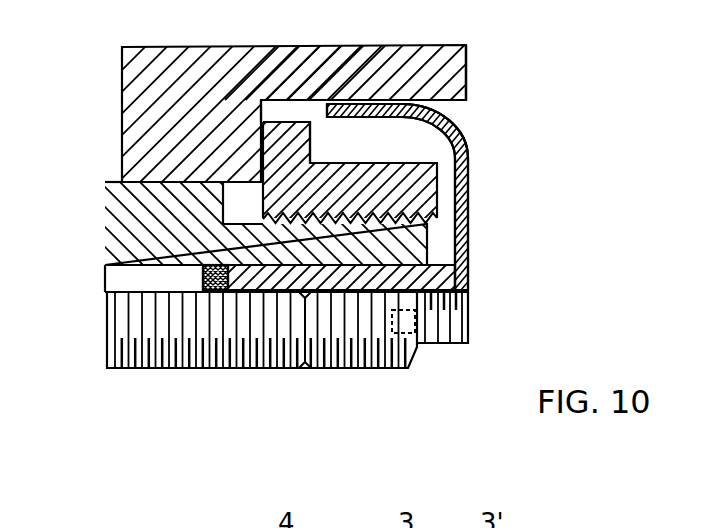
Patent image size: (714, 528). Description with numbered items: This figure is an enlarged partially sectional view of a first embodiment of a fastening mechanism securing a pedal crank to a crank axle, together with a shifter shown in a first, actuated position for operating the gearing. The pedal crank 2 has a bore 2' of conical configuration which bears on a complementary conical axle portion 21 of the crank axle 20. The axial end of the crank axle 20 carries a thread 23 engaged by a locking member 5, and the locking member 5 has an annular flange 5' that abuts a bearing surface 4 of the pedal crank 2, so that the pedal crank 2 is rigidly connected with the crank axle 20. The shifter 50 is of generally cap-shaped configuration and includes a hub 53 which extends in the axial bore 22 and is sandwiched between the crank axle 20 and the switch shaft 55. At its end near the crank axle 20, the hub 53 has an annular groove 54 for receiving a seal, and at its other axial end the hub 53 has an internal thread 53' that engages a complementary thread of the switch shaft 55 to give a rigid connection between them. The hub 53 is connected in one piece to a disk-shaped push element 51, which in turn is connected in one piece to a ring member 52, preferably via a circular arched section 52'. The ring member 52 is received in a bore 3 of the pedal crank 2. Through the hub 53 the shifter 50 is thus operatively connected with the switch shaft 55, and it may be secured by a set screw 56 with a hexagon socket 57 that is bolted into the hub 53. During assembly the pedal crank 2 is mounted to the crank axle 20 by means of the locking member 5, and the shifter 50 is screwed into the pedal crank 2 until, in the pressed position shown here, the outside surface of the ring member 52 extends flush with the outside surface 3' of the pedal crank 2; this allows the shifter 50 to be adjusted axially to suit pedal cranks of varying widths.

The pedal crank 2 is at (233, 113).
The bore of conical configuration 2' is at (142, 202).
The bore of the pedal crank 3 is at (365, 57).
The outside surface of the pedal crank 3' is at (504, 69).
The bearing surface 4 is at (273, 100).
The locking member 5 is at (350, 173).
The annular flange 5' is at (342, 142).
The crank axle 20 is at (97, 237).
The conical axle portion 21 is at (123, 179).
The axial bore 22 is at (135, 274).
The thread 23 is at (398, 218).
The shifter 50 is at (482, 145).
The disk-shaped push element 51 is at (468, 220).
The ring member 52 is at (399, 146).
The circular arched section 52' is at (471, 125).
The hub 53 is at (386, 279).
The internal thread 53' is at (492, 317).
The annular groove 54 is at (223, 292).
The switch shaft 55 is at (147, 370).
The set screw 56 is at (347, 370).
The hexagon socket 57 is at (415, 335).